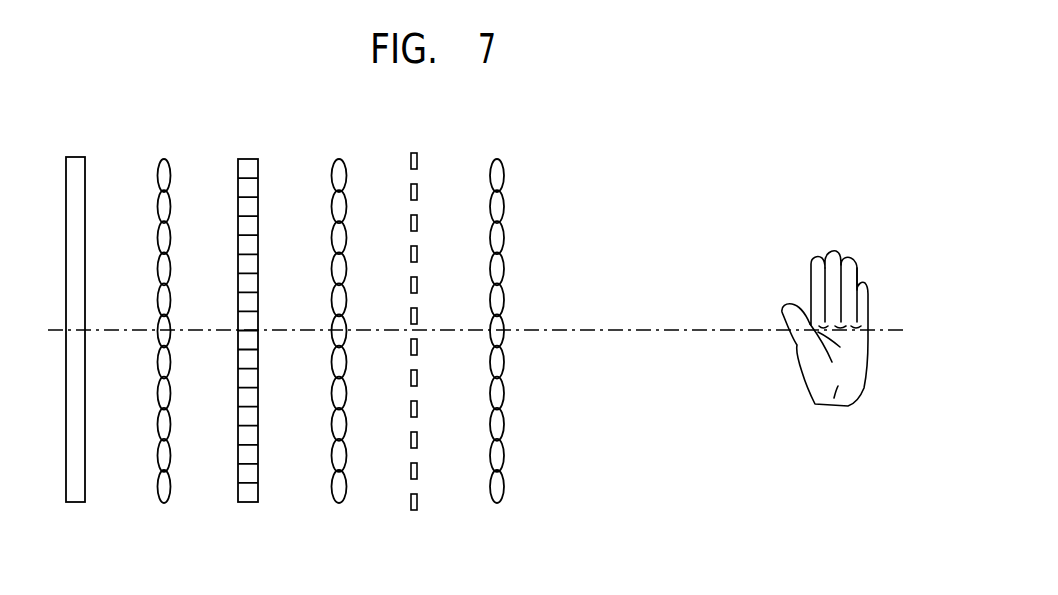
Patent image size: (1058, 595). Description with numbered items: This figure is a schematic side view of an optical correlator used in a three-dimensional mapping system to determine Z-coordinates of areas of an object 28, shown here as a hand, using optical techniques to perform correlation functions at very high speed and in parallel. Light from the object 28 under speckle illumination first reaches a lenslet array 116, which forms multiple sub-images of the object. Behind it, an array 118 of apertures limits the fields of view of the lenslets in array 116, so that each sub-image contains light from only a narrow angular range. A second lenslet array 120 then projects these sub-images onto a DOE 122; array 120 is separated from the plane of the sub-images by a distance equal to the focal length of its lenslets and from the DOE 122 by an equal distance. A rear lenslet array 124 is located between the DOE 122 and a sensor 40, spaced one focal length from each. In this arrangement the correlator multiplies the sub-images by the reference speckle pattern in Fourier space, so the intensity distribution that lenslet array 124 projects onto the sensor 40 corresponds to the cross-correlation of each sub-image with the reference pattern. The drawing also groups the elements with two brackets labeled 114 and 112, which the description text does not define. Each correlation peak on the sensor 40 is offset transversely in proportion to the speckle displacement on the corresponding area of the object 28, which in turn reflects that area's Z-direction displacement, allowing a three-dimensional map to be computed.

The sensor 40 is at (66, 167).
The rear lenslet array 124 is at (159, 168).
The DOE 122 is at (239, 166).
The second lenslet array 120 is at (333, 168).
The array of apertures 118 is at (411, 158).
The lenslet array 116 is at (491, 167).
The first optical unit 114 is at (375, 513).
The second optical unit 112 is at (405, 513).
The object 28 is at (830, 406).